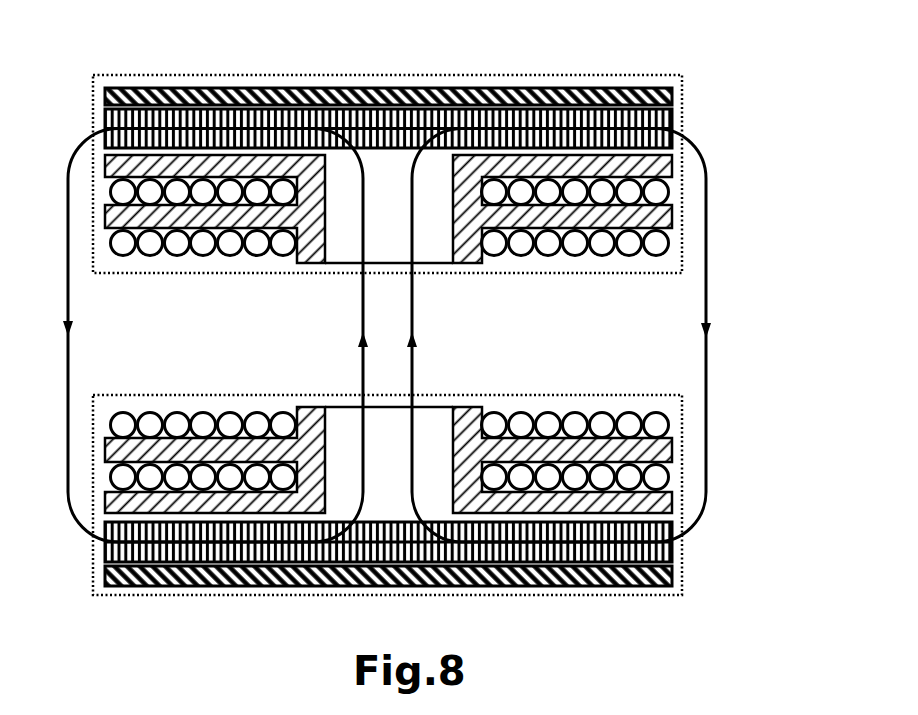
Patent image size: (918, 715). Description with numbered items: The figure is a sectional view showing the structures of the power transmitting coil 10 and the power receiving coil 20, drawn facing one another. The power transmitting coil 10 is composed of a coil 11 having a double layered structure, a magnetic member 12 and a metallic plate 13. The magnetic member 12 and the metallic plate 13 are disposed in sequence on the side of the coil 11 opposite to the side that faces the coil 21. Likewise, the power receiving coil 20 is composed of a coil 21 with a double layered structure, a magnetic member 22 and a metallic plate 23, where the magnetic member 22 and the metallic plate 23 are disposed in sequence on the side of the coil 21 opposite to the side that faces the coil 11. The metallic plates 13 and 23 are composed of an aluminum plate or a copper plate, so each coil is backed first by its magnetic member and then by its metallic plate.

The power transmitting coil 10 is at (679, 418).
The coil 11 is at (308, 407).
The magnetic member 12 is at (672, 543).
The metallic plate 13 is at (607, 586).
The power receiving coil 20 is at (652, 75).
The coil 21 is at (466, 258).
The magnetic member 22 is at (670, 108).
The metallic plate 23 is at (548, 90).